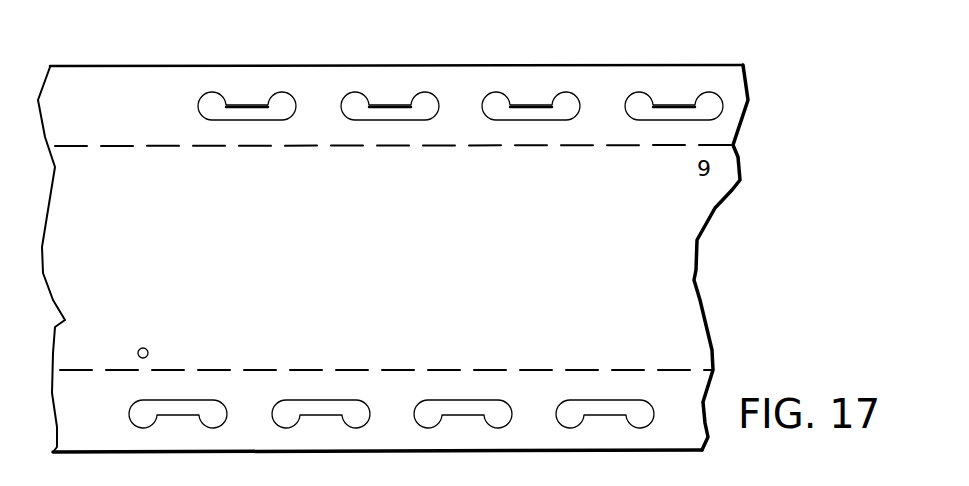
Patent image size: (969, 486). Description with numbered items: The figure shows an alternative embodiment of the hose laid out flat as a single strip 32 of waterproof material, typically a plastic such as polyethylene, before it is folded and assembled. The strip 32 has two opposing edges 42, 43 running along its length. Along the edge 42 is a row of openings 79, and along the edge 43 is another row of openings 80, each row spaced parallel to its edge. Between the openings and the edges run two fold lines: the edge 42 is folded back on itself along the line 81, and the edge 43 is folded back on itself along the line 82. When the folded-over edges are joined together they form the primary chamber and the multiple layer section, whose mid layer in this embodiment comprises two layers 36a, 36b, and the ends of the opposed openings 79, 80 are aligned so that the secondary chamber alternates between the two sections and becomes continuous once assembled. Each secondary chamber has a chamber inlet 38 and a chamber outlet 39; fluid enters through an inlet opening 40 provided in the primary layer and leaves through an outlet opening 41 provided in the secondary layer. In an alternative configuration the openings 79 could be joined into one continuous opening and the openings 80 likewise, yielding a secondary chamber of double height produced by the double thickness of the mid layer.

The strip 32 is at (683, 220).
The mid layer section 36a is at (250, 365).
The mid layer section 36b is at (265, 146).
The chamber inlet 38 is at (708, 108).
The chamber outlet 39 is at (135, 410).
The inlet opening 40 is at (665, 177).
The outlet opening 41 is at (149, 348).
The edge 42 is at (335, 451).
The edge 43 is at (306, 66).
The openings 79 is at (177, 409).
The openings 80 is at (232, 110).
The fold line 81 is at (471, 372).
The fold line 82 is at (494, 146).